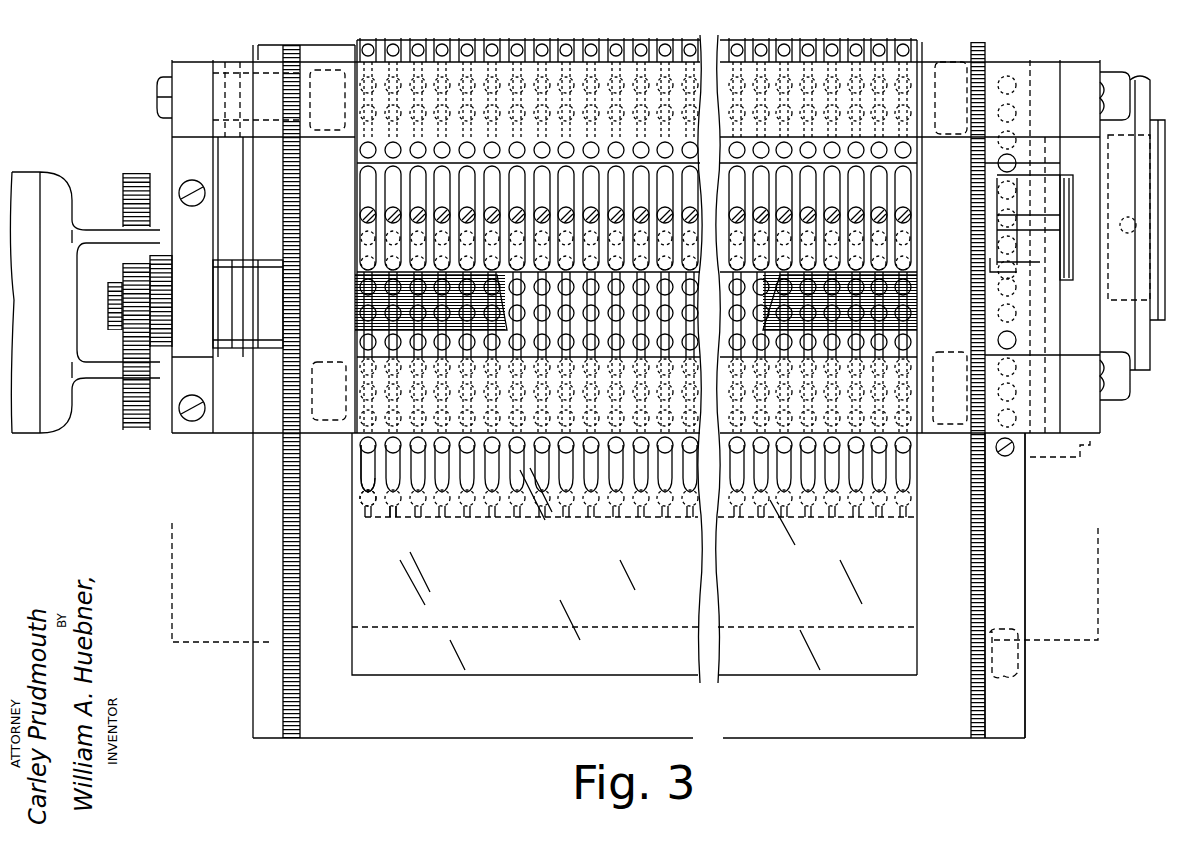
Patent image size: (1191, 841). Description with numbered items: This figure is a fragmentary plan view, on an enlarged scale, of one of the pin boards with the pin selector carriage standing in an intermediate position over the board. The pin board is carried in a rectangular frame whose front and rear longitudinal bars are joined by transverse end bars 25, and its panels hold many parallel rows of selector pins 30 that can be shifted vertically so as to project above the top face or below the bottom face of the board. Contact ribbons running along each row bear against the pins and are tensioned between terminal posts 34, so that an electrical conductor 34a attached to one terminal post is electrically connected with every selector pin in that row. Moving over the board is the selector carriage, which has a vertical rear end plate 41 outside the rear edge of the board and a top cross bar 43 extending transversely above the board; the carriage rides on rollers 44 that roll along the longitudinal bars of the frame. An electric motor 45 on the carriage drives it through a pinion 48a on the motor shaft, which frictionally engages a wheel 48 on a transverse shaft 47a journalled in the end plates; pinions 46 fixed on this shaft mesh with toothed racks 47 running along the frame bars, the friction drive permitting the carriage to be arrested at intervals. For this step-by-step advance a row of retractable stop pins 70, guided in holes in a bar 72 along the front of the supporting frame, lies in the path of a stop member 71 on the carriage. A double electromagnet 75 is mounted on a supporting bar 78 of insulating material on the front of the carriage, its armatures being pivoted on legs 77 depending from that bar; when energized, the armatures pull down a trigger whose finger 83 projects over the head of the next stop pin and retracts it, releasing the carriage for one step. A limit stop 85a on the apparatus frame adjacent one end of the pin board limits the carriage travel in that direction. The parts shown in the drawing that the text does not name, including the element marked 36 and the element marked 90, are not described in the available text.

The transverse end bars 25 is at (522, 676).
The selector pins 30 is at (355, 445).
The terminal posts 34 is at (392, 507).
The electrical conductor 34a is at (424, 512).
The finger 36 is at (358, 483).
The rear end plate 41 is at (178, 161).
The top cross bar 43 is at (246, 430).
The rollers 44 is at (312, 68).
The electric motor 45 is at (85, 302).
The pinions 46 is at (298, 272).
The toothed racks 47 is at (300, 620).
The transverse shaft 47a is at (356, 294).
The wheel 48 is at (123, 424).
The pinion 48a is at (116, 278).
The stop pins 70 is at (1003, 163).
The stop member 71 is at (1015, 225).
The bar 72 is at (1020, 545).
The double electromagnet 75 is at (1158, 240).
The legs 77 is at (1122, 78).
The supporting bar 78 is at (1145, 112).
The finger 83 is at (1030, 238).
The limit stop 85a is at (1020, 648).
The bar 90 is at (1062, 182).